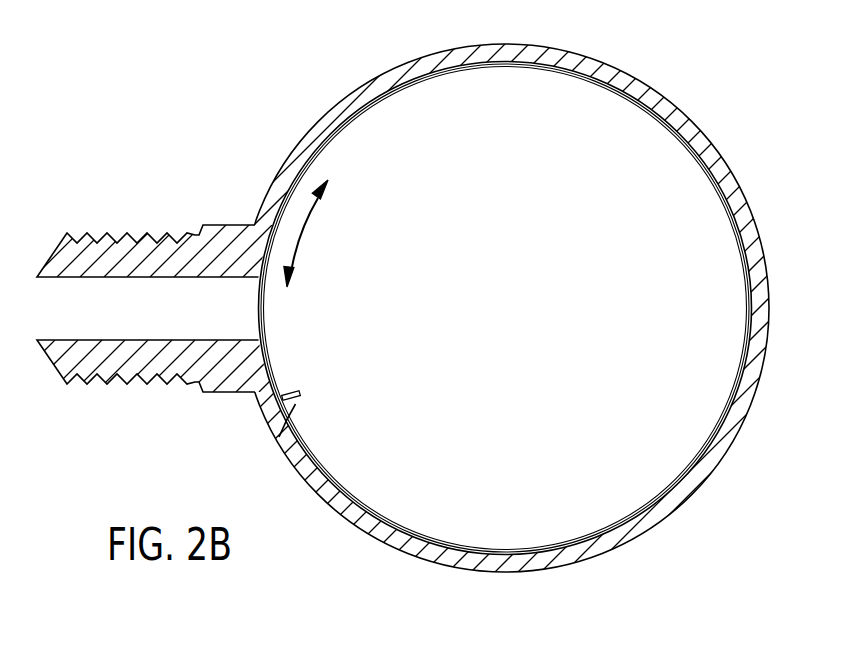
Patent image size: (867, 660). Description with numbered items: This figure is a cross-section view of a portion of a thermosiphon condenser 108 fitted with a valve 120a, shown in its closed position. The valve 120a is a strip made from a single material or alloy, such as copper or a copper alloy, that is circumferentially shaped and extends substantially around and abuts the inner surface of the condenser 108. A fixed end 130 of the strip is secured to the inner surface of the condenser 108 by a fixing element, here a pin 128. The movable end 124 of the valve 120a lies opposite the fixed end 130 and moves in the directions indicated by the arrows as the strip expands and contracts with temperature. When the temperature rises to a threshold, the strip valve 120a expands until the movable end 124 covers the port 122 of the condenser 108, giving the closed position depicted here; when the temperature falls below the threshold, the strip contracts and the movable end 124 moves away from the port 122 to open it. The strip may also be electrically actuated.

The condenser 108 is at (698, 125).
The valve 120a is at (332, 133).
The port 122 is at (180, 322).
The movable end 124 is at (262, 305).
The pin 128 is at (297, 395).
The fixed end 130 is at (290, 423).